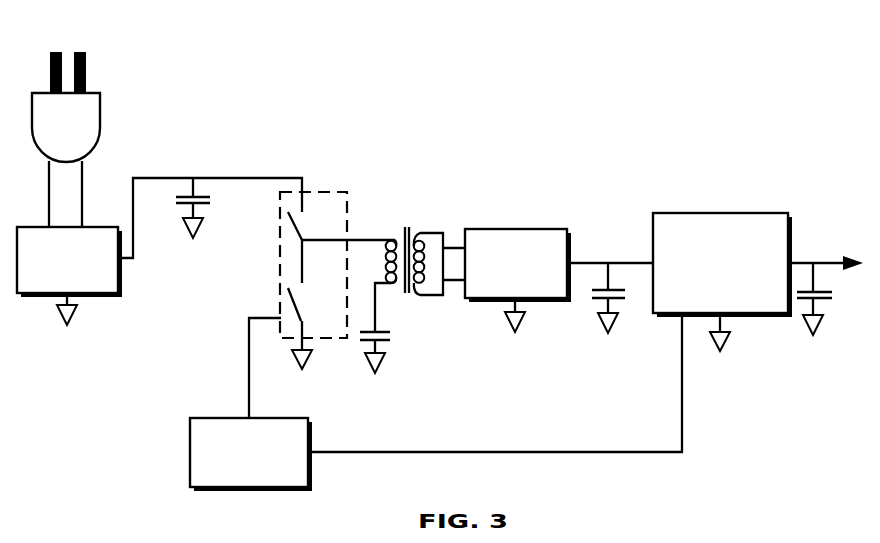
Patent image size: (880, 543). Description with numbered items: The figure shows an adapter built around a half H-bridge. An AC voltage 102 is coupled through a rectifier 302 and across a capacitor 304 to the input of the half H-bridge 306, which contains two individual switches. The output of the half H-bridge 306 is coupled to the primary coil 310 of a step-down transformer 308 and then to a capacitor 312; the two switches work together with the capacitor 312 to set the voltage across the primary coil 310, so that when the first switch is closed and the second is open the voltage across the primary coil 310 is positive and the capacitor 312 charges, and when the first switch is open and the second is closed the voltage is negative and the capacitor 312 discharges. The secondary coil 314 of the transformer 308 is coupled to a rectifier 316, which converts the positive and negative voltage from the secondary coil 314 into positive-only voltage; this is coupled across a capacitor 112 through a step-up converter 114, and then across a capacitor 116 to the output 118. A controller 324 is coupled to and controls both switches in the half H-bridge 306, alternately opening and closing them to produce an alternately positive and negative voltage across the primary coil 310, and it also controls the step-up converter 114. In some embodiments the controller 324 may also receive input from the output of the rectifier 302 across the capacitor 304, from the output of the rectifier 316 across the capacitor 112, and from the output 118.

The AC voltage 102 is at (107, 83).
The rectifier 302 is at (69, 276).
The capacitor 304 is at (167, 200).
The half H-bridge 306 is at (281, 256).
The transformer 308 is at (398, 202).
The primary coil 310 is at (383, 220).
The capacitor 312 is at (390, 353).
The secondary coil 314 is at (432, 223).
The rectifier 316 is at (518, 280).
The capacitor 112 is at (585, 305).
The step-up converter 114 is at (722, 282).
The capacitor 116 is at (796, 313).
The output 118 is at (848, 245).
The controller 324 is at (251, 454).